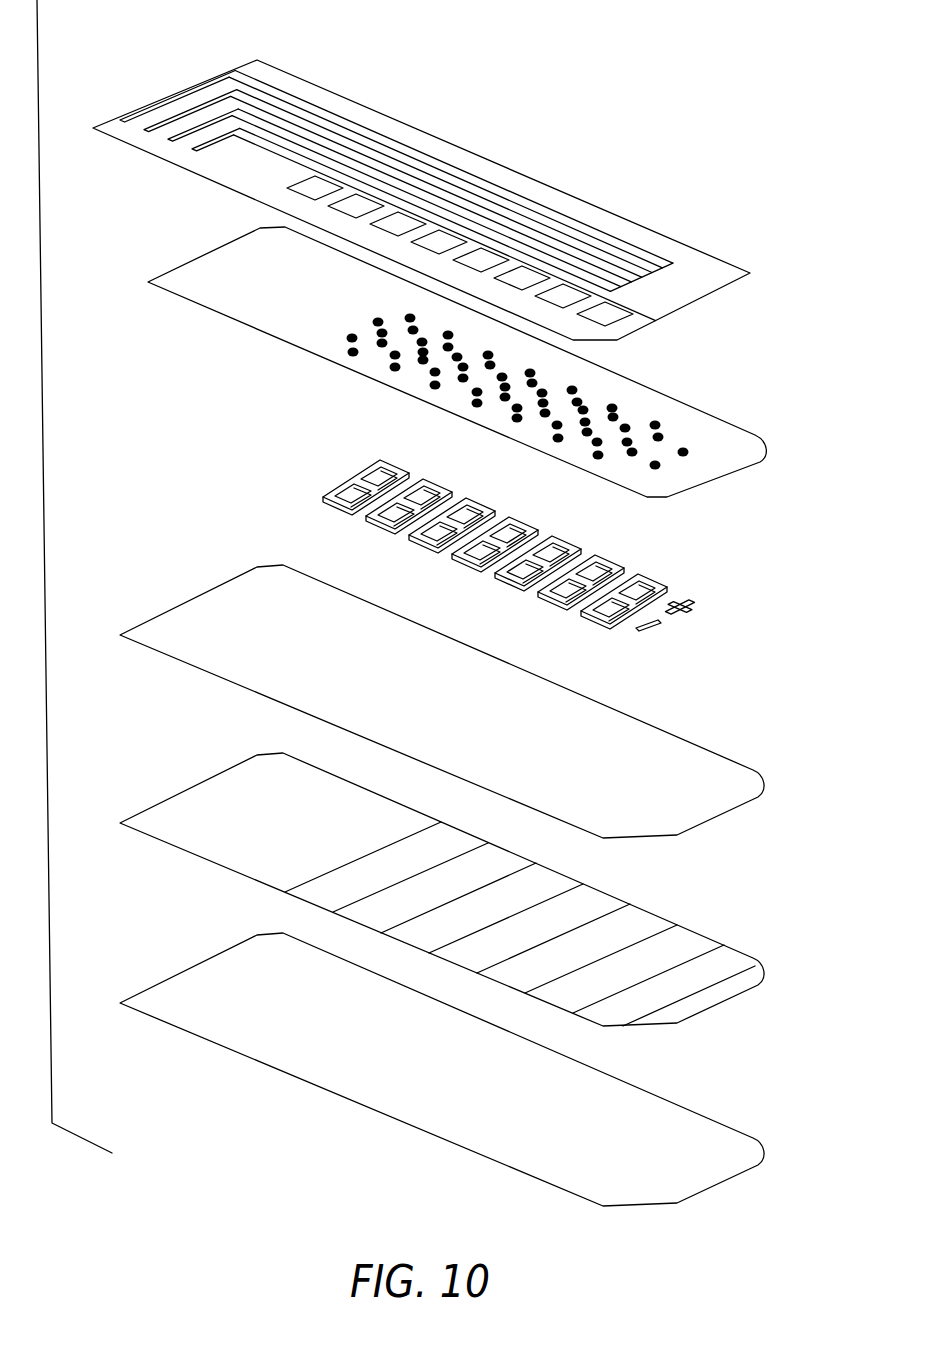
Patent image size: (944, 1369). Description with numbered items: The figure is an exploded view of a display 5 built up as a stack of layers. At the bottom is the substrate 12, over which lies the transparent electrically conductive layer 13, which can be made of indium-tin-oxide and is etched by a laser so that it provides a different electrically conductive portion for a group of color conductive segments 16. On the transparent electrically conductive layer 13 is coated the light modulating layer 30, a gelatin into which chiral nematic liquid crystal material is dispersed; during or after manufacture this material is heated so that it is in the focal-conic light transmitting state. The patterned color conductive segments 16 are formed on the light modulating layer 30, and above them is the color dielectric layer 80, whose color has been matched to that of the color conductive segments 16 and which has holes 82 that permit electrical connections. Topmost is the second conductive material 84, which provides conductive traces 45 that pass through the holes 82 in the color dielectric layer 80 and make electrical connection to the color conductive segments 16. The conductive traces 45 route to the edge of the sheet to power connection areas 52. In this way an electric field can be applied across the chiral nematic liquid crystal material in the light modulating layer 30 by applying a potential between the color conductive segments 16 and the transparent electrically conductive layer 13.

The display 5 is at (587, 73).
The second conductive material 84 is at (547, 197).
The conductive traces 45 is at (176, 100).
The power connection areas 52 is at (168, 162).
The color dielectric layer 80 is at (712, 468).
The holes 82 is at (654, 425).
The color conductive segments 16 is at (323, 497).
The light modulating layer 30 is at (663, 742).
The transparent electrically conductive layer 13 is at (720, 955).
The substrate 12 is at (208, 1023).